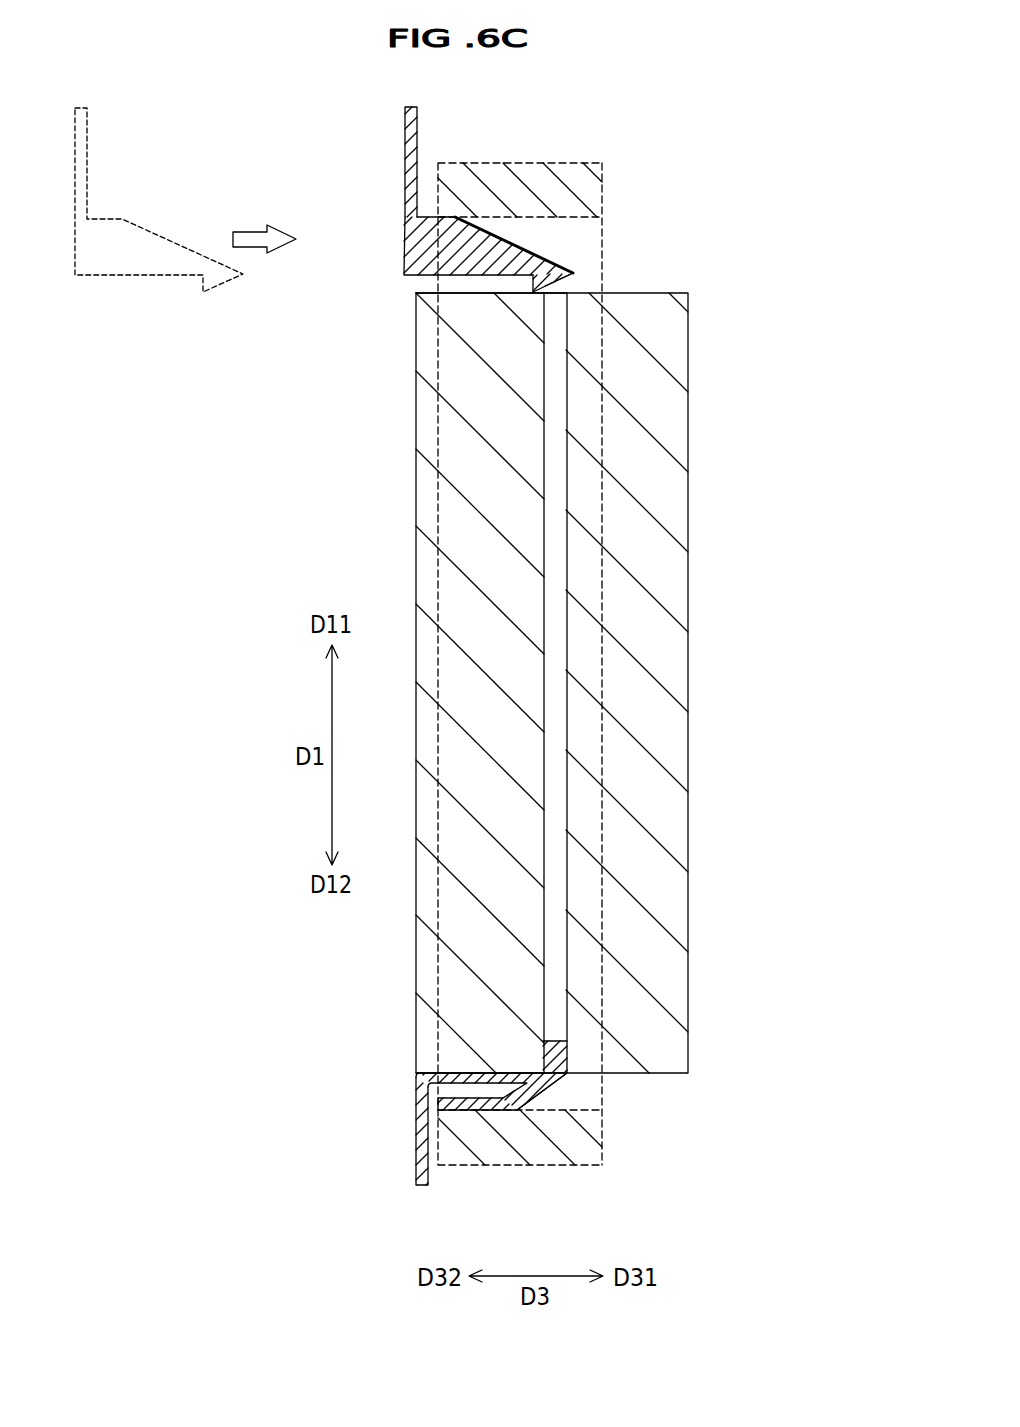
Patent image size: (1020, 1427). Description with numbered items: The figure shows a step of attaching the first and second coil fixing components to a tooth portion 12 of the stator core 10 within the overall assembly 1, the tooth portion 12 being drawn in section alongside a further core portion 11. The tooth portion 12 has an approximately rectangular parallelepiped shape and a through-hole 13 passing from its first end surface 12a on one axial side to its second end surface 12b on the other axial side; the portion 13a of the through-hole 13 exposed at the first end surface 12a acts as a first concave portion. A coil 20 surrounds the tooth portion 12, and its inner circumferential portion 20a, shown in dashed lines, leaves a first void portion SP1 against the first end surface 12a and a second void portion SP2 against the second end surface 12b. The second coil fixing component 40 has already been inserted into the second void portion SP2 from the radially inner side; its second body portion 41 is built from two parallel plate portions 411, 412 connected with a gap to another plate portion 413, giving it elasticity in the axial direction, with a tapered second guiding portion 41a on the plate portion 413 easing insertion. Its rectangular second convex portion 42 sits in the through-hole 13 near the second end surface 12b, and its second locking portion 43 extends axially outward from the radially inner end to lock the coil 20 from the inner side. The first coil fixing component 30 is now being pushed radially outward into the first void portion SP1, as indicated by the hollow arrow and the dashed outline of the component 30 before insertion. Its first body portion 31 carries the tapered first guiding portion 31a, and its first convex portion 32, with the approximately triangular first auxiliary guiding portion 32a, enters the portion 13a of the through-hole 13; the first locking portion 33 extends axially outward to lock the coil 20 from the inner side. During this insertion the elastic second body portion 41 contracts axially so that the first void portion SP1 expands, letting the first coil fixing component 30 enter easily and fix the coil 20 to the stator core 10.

The display device 1 is at (701, 148).
The stator core 10 is at (702, 381).
The first panel 11 is at (690, 498).
The tooth portion 12 is at (416, 492).
The first end surface 12a is at (485, 283).
The second end surface 12b is at (474, 1080).
The through-hole 13 is at (557, 412).
The portion of the through-hole exposed to the first end surface 13a is at (560, 296).
The coil 20 is at (538, 168).
The inner circumferential portion 20a is at (575, 224).
The first coil fixing component 30 is at (188, 183).
The first body portion 31 is at (408, 256).
The first guiding portion 31a is at (524, 246).
The first convex portion 32 is at (533, 280).
The first auxiliary guiding portion 32a is at (545, 290).
The first locking portion 33 is at (408, 142).
The second coil fixing component 40 is at (403, 1117).
The second body portion 41 is at (540, 1078).
The second guiding portion 41a is at (558, 1093).
The second convex portion 42 is at (555, 1040).
The second locking portion 43 is at (414, 1176).
The plate portion 411 is at (497, 1099).
The plate portion 412 is at (460, 1104).
The plate portion 413 is at (525, 1085).
The first void portion SP1 is at (592, 235).
The second void portion SP2 is at (597, 1098).